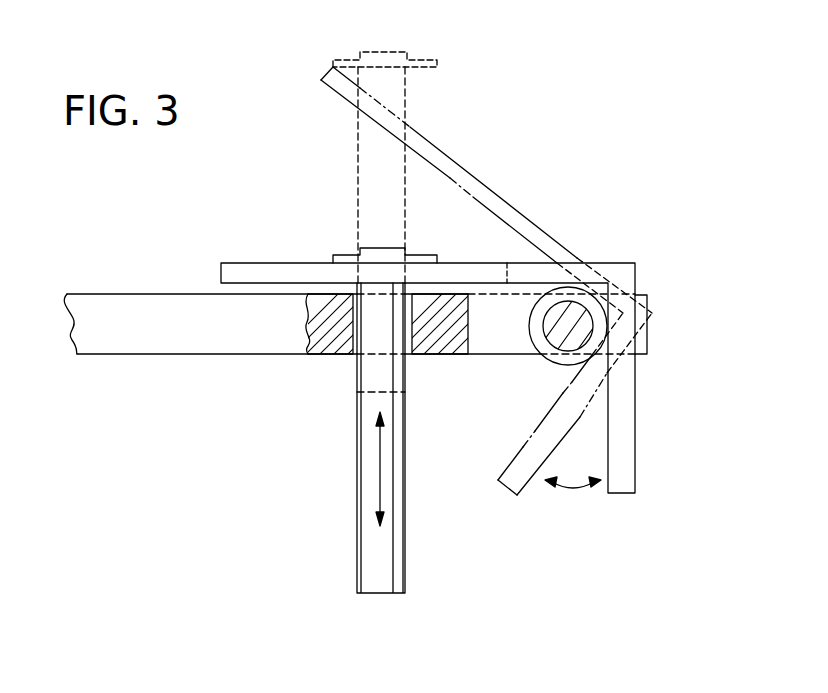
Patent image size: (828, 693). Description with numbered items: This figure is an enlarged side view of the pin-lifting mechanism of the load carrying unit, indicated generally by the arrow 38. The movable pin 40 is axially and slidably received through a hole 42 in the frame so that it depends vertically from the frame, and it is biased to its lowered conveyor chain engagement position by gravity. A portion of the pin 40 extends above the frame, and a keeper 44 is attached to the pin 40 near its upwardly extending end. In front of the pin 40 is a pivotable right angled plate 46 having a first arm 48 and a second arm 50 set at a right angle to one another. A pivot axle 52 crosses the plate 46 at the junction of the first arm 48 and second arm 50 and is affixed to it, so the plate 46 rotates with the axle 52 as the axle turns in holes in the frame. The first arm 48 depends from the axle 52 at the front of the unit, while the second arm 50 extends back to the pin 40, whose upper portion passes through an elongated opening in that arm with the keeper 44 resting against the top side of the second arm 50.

The mounting assembly 38 is at (634, 234).
The movable pin 40 is at (370, 542).
The hole 42 is at (356, 326).
The keeper 44 is at (438, 62).
The pivotable right angled plate 46 is at (632, 278).
The first arm 48 is at (580, 418).
The second arm 50 is at (468, 262).
The pivot axle 52 is at (573, 312).